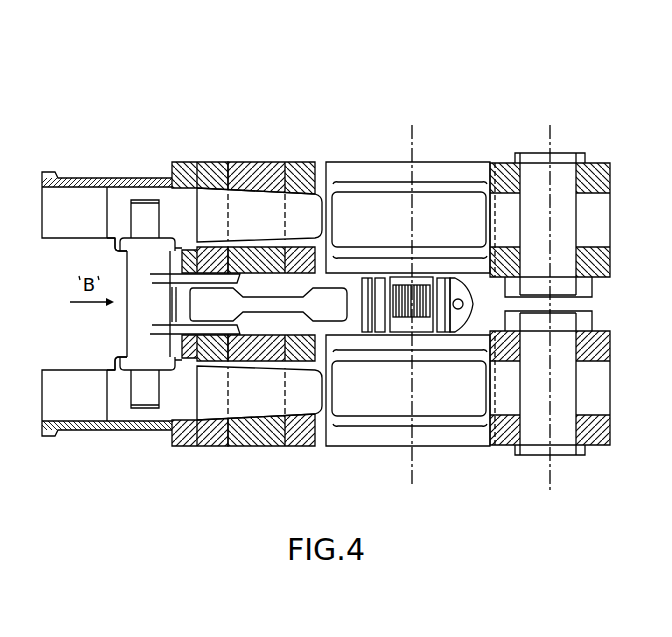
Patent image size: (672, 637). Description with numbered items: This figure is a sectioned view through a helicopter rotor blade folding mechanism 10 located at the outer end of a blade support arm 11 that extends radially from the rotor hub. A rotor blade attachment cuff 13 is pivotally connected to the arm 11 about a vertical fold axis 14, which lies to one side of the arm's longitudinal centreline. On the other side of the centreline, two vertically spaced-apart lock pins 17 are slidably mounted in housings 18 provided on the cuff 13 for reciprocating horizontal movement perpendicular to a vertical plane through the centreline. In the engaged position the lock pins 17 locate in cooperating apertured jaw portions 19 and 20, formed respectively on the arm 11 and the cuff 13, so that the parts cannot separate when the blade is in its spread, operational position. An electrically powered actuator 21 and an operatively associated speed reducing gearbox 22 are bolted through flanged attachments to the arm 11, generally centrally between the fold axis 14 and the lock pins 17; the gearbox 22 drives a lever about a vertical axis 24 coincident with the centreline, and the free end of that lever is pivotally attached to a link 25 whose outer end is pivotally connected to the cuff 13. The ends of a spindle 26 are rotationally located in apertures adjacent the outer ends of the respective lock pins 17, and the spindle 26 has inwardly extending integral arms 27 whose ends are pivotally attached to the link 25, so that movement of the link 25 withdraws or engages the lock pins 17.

The blade folding mechanism 10 is at (499, 104).
The blade support arm 11 is at (607, 162).
The rotor blade attachment cuff 13 is at (600, 218).
The vertical fold axis 14 is at (552, 138).
The lock pins 17 is at (114, 247).
The housings 18 is at (78, 178).
The apertured jaw portion 19 is at (202, 162).
The apertured jaw portion 20 is at (262, 162).
The electrically powered actuator 21 is at (442, 160).
The speed reducing gearbox 22 is at (377, 441).
The vertical axis 24 is at (404, 128).
The link 25 is at (335, 313).
The spindle 26 is at (136, 311).
The integral arms 27 is at (170, 326).